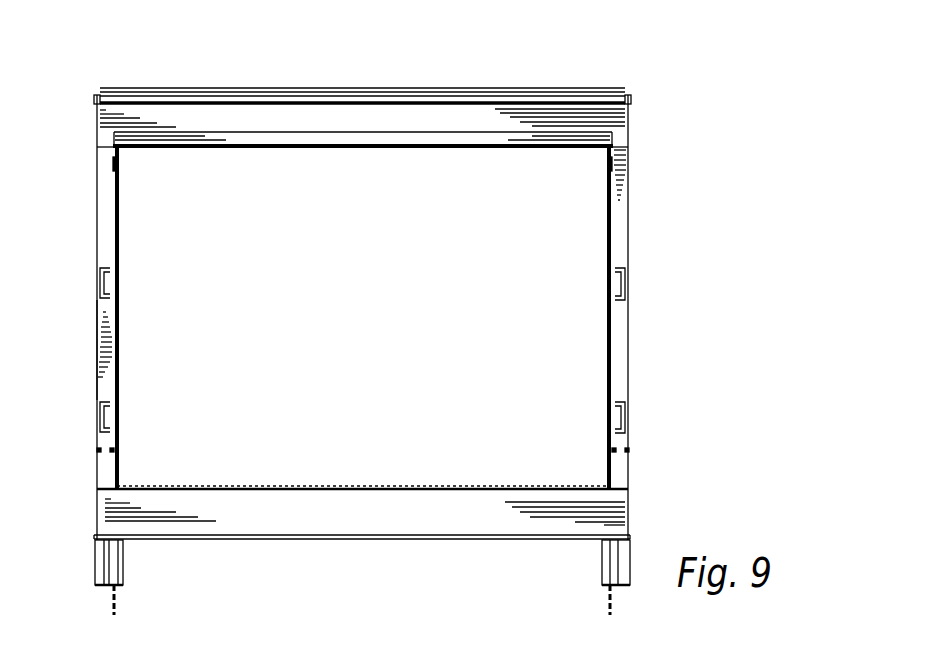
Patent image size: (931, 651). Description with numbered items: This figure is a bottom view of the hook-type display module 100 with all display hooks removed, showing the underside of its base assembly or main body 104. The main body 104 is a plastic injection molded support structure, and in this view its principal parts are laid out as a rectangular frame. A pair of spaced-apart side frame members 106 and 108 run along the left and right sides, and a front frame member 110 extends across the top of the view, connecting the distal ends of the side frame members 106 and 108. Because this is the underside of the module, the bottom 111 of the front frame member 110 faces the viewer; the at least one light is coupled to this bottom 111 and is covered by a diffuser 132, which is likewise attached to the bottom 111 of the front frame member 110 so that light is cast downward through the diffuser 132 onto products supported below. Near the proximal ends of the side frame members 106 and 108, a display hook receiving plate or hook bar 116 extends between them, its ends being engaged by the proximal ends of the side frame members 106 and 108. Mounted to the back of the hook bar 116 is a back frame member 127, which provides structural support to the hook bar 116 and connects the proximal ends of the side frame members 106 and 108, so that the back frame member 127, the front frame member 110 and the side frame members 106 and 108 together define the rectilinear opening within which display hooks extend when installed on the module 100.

The hook-type display module 100 is at (722, 56).
The base assembly or main body 104 is at (91, 384).
The side frame member 106 is at (620, 243).
The side frame member 108 is at (103, 224).
The front frame member 110 is at (370, 150).
The bottom of front frame member 111 is at (460, 138).
The hook bar 116 is at (388, 483).
The back frame member 127 is at (296, 544).
The diffuser 132 is at (325, 118).